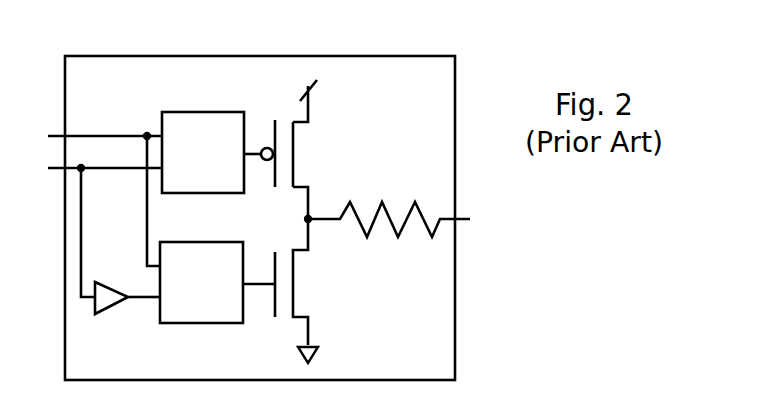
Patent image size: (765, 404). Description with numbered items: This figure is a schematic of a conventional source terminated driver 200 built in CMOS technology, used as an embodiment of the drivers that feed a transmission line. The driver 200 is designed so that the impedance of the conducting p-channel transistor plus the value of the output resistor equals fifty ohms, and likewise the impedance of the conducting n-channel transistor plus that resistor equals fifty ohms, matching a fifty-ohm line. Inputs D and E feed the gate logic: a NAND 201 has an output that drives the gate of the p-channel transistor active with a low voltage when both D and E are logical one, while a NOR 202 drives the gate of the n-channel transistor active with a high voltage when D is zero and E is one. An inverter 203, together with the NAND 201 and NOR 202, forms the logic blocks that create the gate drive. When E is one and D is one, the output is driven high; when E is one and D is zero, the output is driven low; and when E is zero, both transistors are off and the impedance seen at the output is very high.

The source terminated driver 200 is at (282, 37).
The NAND 201 is at (195, 112).
The NOR 202 is at (195, 242).
The inverter 203 is at (118, 268).